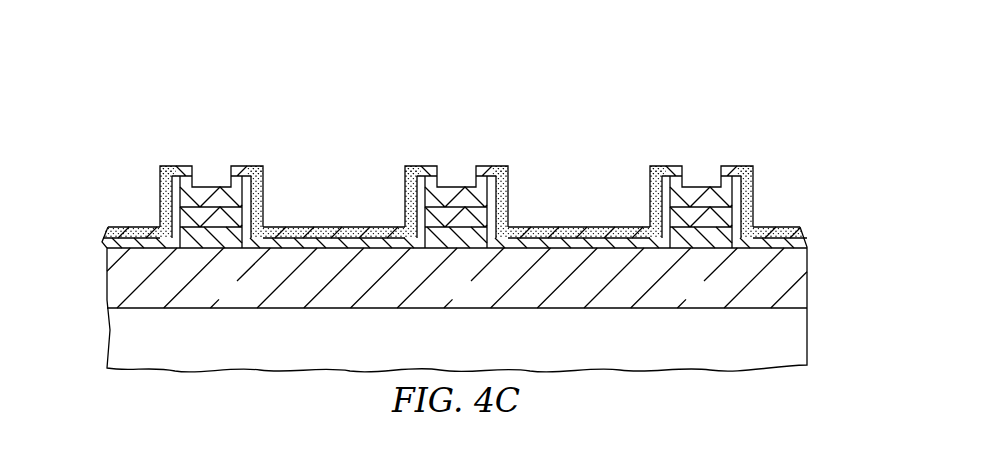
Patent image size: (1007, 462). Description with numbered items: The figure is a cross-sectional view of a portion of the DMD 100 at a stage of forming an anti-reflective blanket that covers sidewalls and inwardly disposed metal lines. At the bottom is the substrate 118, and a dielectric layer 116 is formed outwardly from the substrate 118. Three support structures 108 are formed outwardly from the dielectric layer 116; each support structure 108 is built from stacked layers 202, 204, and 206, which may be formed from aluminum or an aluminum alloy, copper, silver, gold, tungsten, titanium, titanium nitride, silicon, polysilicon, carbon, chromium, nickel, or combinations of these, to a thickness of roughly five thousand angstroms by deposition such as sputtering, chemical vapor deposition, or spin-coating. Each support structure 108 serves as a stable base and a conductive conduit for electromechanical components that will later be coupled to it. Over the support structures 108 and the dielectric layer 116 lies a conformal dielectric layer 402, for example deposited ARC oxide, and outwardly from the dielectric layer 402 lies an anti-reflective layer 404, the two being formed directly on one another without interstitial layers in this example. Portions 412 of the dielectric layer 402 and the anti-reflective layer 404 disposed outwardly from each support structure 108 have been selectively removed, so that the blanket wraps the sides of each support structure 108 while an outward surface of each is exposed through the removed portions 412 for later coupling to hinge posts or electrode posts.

The DMD 100 is at (311, 81).
The support structure 108 is at (169, 132).
The dielectric layer 116 is at (107, 292).
The substrate 118 is at (476, 351).
The layer 202 is at (214, 250).
The layer 204 is at (190, 221).
The layer 206 is at (233, 197).
The dielectric layer 402 is at (107, 241).
The anti-reflective layer 404 is at (802, 232).
The selectively removed portions 412 is at (231, 156).